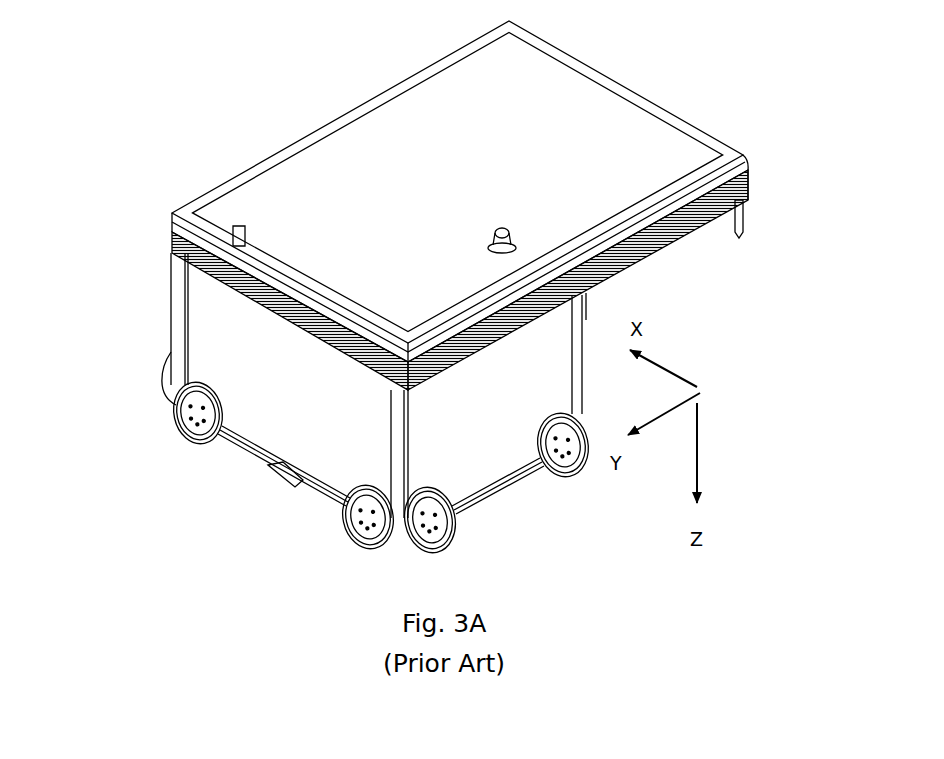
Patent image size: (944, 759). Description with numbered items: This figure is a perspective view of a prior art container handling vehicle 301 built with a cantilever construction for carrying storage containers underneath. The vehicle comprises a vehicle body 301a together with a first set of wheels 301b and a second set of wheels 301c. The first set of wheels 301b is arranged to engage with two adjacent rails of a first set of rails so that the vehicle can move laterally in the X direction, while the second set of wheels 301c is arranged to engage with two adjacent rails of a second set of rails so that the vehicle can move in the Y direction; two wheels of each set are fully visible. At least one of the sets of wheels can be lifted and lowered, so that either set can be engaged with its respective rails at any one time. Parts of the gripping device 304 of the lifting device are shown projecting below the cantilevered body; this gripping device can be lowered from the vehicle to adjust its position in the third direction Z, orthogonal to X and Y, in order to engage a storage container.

The container handling vehicle 301 is at (198, 113).
The vehicle body 301a is at (176, 232).
The first set of wheels 301b is at (528, 505).
The second set of wheels 301c is at (230, 487).
The gripping device 304 is at (753, 235).